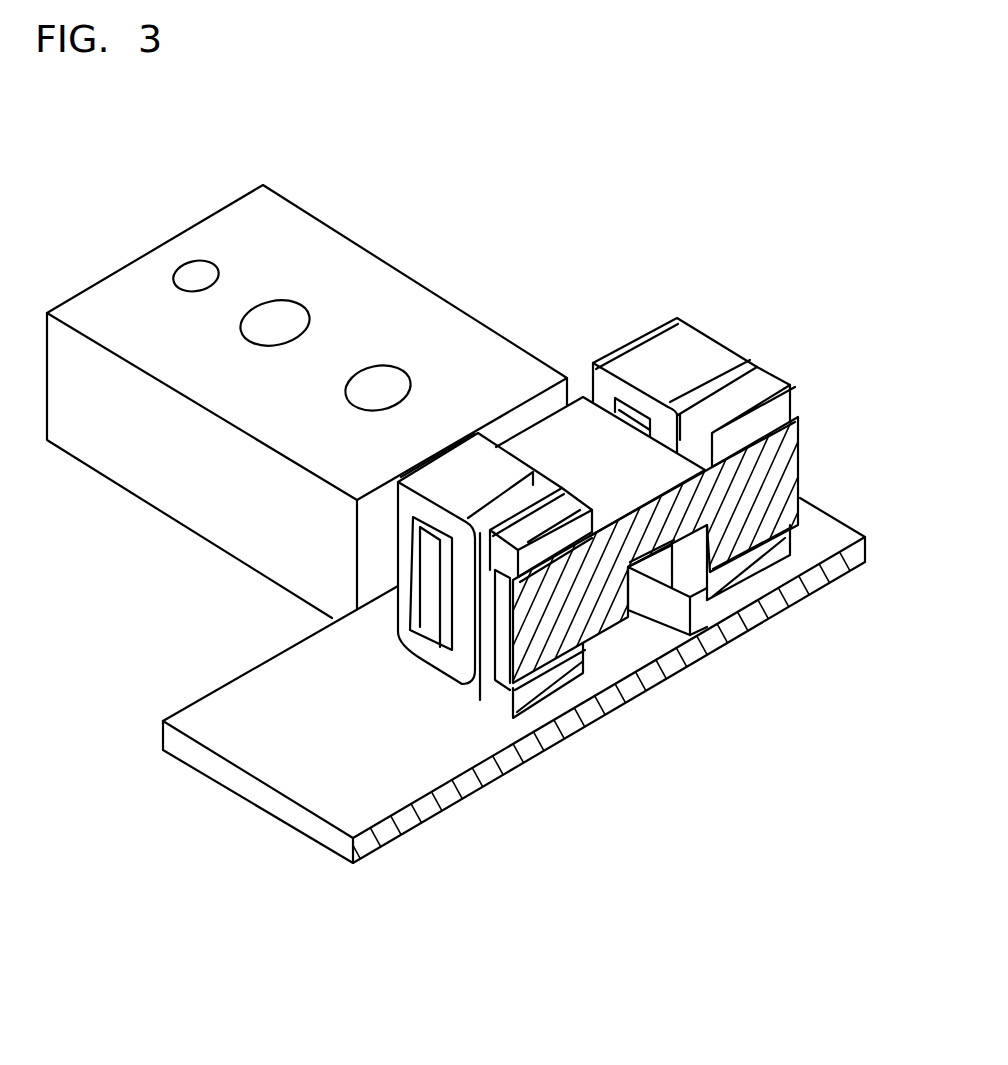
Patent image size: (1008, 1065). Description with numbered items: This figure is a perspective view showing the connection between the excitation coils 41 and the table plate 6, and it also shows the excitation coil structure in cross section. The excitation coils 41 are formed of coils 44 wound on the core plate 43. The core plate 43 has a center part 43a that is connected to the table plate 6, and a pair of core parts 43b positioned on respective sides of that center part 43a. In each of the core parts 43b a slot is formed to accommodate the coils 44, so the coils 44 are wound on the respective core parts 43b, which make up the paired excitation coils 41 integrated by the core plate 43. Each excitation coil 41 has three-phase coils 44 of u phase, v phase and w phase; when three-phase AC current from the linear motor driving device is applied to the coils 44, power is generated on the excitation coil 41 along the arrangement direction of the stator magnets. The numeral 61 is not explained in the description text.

The table plate 6 is at (527, 542).
The protruding portion of heat sink 61 is at (378, 258).
The excitation coil 41 is at (608, 518).
The core plate 43 is at (608, 517).
The center part 43a is at (527, 443).
The core part 43b is at (792, 485).
The coil 44 is at (653, 358).